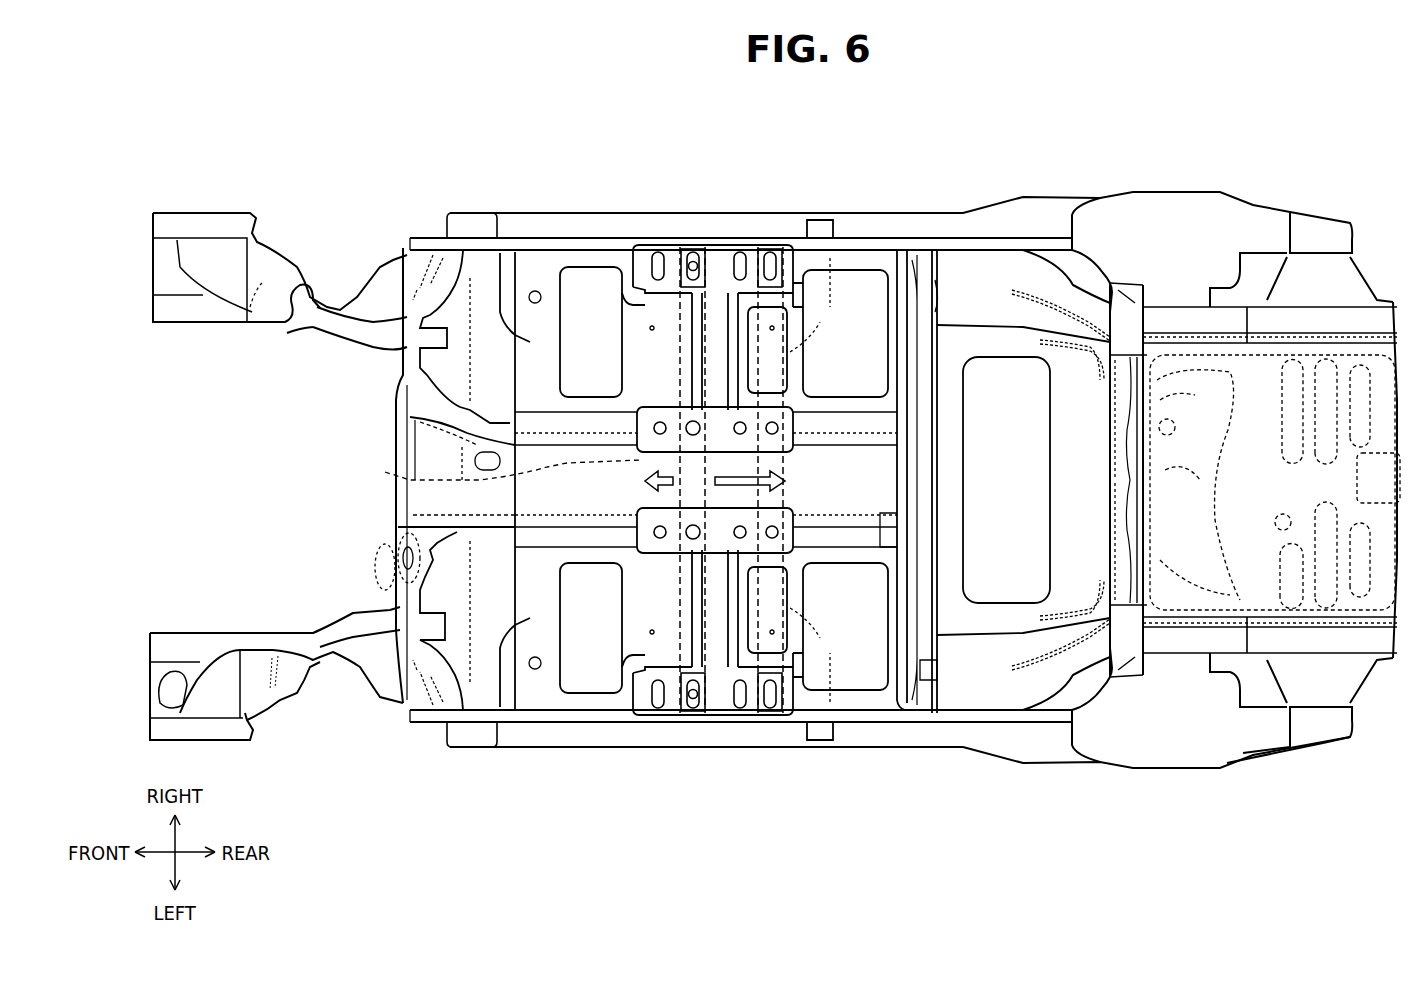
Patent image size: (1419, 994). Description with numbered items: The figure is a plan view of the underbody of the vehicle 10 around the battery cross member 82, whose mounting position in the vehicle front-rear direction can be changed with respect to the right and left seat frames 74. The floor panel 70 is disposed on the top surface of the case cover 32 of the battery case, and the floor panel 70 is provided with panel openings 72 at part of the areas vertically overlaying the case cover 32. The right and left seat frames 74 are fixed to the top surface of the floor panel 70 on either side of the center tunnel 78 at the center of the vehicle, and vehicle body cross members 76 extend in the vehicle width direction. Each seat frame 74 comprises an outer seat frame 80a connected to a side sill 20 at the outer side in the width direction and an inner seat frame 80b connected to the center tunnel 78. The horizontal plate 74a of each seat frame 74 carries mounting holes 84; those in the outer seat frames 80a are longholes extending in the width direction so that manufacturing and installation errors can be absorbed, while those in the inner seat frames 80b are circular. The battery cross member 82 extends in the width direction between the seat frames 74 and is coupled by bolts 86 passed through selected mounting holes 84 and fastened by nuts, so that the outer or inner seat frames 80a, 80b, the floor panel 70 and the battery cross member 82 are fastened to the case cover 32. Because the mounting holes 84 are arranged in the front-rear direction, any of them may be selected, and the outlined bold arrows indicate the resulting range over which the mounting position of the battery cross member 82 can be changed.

The vehicle 10 is at (775, 480).
The side sills 20 is at (682, 191).
The case cover 32 is at (580, 237).
The floor panel 70 is at (497, 213).
The panel openings 72 is at (545, 237).
The seat frames 74 is at (727, 237).
The horizontal plate 74a is at (747, 237).
The vehicle body cross members 76 is at (720, 353).
The center tunnel 78 is at (833, 500).
The outer seat frames 80a is at (690, 237).
The inner seat frames 80b is at (755, 445).
The battery cross member 82 is at (840, 307).
The mounting holes 84 is at (640, 237).
The bolts 86 is at (718, 237).